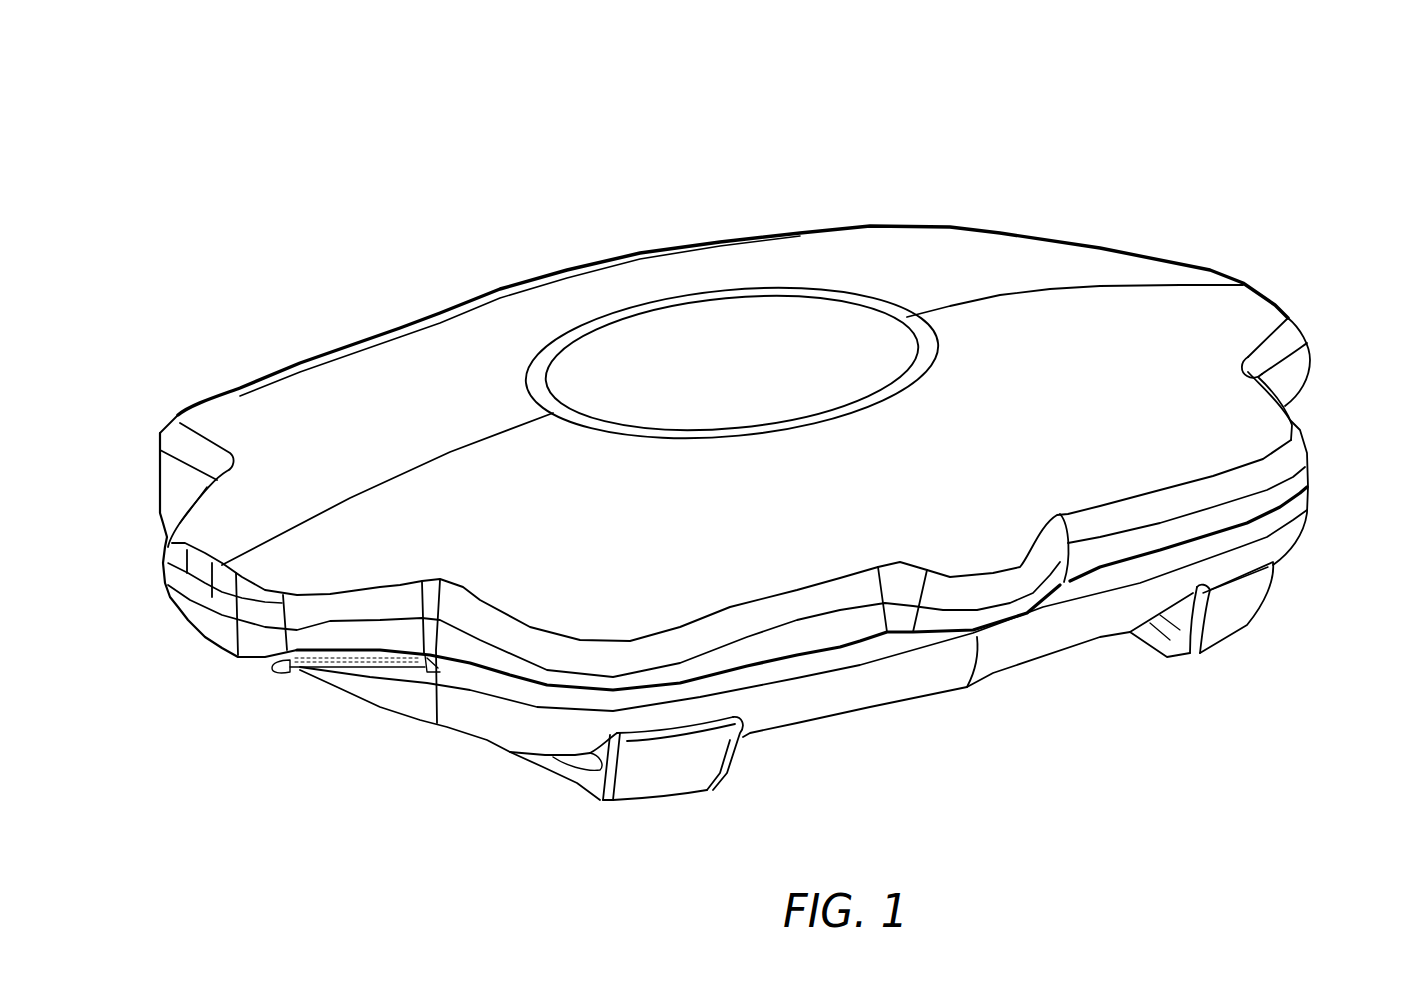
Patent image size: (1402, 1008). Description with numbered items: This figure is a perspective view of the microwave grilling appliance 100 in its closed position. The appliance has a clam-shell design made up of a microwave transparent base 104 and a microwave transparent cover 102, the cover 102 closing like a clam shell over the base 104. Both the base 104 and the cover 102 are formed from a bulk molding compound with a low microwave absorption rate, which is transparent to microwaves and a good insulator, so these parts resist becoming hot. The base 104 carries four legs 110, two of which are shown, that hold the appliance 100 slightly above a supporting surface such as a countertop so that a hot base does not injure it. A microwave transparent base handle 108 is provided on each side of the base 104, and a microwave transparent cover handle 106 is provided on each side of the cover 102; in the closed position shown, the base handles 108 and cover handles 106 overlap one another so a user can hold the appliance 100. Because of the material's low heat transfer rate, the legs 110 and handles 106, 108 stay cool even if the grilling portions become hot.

The microwave grilling appliance 100 is at (1063, 103).
The microwave transparent cover 102 is at (413, 345).
The microwave transparent base 104 is at (470, 715).
The microwave transparent cover handle 106 is at (193, 567).
The microwave transparent base handle 108 is at (257, 653).
The legs 110 is at (683, 778).